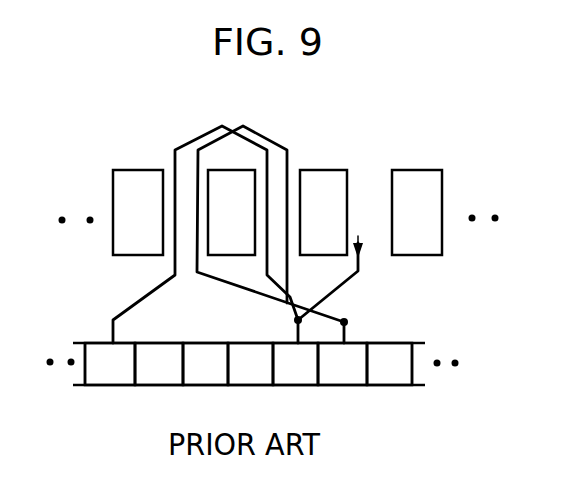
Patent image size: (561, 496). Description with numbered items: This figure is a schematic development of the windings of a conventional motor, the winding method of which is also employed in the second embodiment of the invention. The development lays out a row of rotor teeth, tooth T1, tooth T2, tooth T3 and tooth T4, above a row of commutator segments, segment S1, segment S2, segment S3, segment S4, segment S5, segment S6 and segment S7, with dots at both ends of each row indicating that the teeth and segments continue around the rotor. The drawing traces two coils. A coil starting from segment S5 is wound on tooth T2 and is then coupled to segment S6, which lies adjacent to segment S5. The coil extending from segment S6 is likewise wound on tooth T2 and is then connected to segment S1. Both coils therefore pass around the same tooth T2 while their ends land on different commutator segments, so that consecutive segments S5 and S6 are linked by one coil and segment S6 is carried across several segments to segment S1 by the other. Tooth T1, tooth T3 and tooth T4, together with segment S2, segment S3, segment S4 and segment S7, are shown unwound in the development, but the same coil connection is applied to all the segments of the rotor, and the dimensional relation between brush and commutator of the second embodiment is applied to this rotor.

The tooth T1 is at (138, 212).
The tooth T2 is at (231, 212).
The tooth T3 is at (323, 212).
The tooth T4 is at (417, 212).
The segment S1 is at (110, 364).
The segment S2 is at (159, 364).
The segment S3 is at (205, 364).
The segment S4 is at (250, 364).
The segment S5 is at (295, 364).
The segment S6 is at (342, 364).
The segment S7 is at (389, 364).